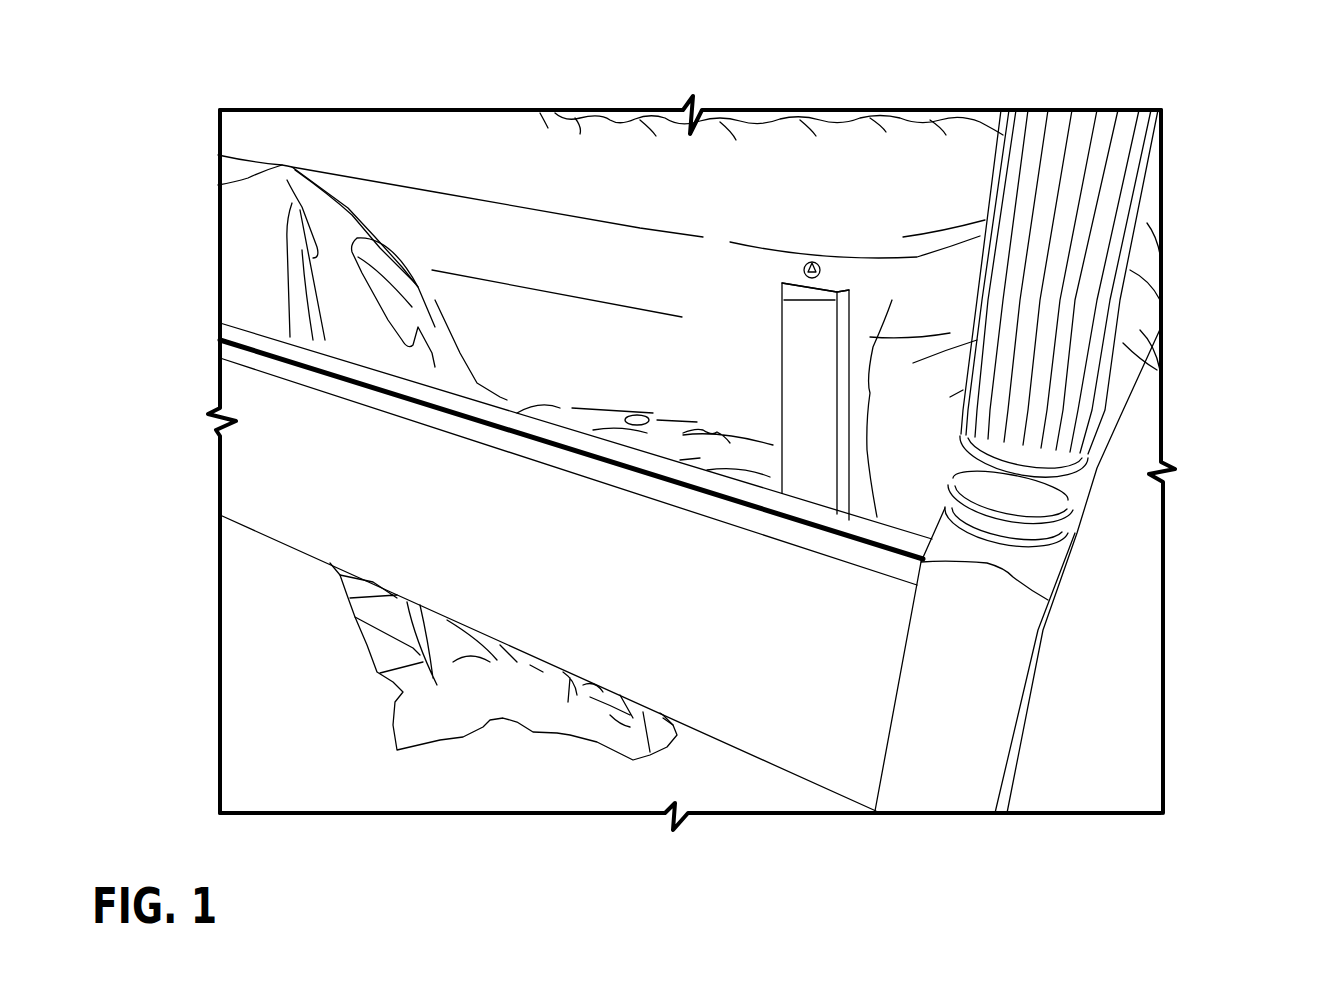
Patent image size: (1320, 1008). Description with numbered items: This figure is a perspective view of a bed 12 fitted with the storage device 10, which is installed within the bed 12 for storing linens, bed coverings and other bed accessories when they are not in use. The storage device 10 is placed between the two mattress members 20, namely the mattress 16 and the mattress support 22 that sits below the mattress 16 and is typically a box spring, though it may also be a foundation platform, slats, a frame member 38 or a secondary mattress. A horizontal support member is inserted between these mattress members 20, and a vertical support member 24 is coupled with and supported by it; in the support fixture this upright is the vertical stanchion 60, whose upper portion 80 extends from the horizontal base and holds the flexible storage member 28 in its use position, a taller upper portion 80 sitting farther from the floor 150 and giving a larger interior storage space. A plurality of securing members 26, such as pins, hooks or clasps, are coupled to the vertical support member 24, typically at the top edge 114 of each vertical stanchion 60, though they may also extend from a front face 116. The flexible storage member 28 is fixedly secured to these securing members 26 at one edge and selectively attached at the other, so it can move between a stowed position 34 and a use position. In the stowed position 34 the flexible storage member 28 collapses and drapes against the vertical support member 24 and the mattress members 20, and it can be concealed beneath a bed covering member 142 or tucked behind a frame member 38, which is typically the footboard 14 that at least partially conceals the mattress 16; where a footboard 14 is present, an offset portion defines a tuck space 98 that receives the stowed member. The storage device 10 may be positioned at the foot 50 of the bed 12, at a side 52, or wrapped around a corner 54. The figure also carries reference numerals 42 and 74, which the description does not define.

The storage device 10 is at (870, 382).
The bed 12 is at (818, 92).
The footboard 14 is at (243, 443).
The mattress 16 is at (661, 185).
The mattress members 20 is at (983, 105).
The mattress support 22 is at (551, 688).
The vertical support member 24 is at (833, 347).
The securing members 26 is at (808, 258).
The flexible storage member 28 is at (389, 244).
The stowed position 34 is at (250, 145).
The frame member 38 is at (1070, 637).
The rail side face 42 is at (310, 475).
The foot of the bed 50 is at (242, 280).
The side of the bed 52 is at (1093, 487).
The corner of the bed 54 is at (1097, 525).
The vertical stanchion 60 is at (812, 431).
The fabric edge 74 is at (513, 145).
The upper portion 80 is at (775, 318).
The tuck space 98 is at (560, 410).
The top edge 114 is at (828, 283).
The front face 116 is at (797, 375).
The bed covering member 142 is at (958, 176).
The floor 150 is at (277, 690).